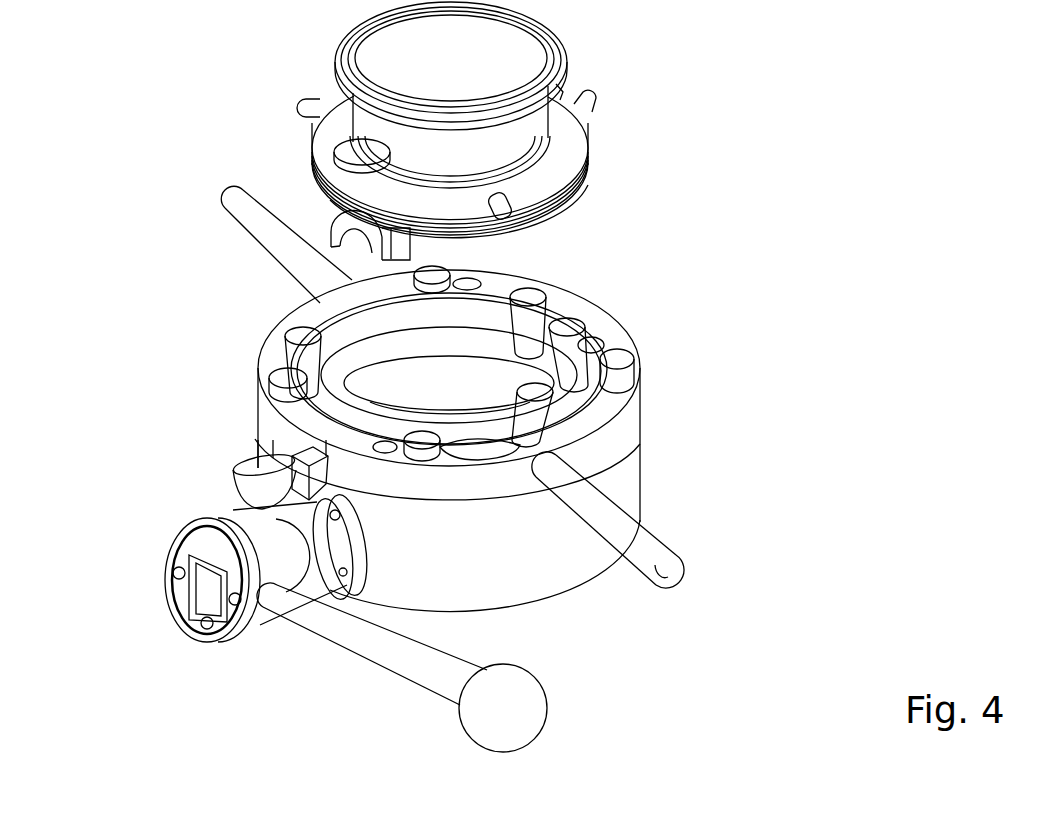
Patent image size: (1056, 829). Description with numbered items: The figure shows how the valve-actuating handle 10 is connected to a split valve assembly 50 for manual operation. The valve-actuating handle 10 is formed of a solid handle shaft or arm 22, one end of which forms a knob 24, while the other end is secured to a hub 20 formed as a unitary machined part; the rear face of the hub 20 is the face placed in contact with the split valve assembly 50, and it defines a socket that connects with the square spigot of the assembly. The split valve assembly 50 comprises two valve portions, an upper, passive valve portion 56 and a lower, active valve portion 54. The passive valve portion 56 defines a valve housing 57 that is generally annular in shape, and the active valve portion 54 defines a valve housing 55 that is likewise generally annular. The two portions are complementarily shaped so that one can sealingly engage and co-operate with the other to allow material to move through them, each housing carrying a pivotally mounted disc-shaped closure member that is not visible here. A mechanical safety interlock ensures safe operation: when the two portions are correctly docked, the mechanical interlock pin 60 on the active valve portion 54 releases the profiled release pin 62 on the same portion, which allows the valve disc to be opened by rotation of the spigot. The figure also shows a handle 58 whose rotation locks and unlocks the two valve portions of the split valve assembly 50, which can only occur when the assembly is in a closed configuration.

The valve-actuating handle 10 is at (348, 669).
The hub 20 is at (228, 518).
The handle shaft or arm 22 is at (328, 625).
The knob 24 is at (528, 708).
The split valve assembly 50 is at (878, 329).
The active valve portion 54 is at (638, 462).
The valve housing 55 is at (568, 547).
The passive valve portion 56 is at (590, 127).
The valve housing 57 is at (512, 140).
The handle 58 is at (242, 198).
The mechanical interlock pin 60 is at (300, 468).
The profiled release pin 62 is at (250, 474).